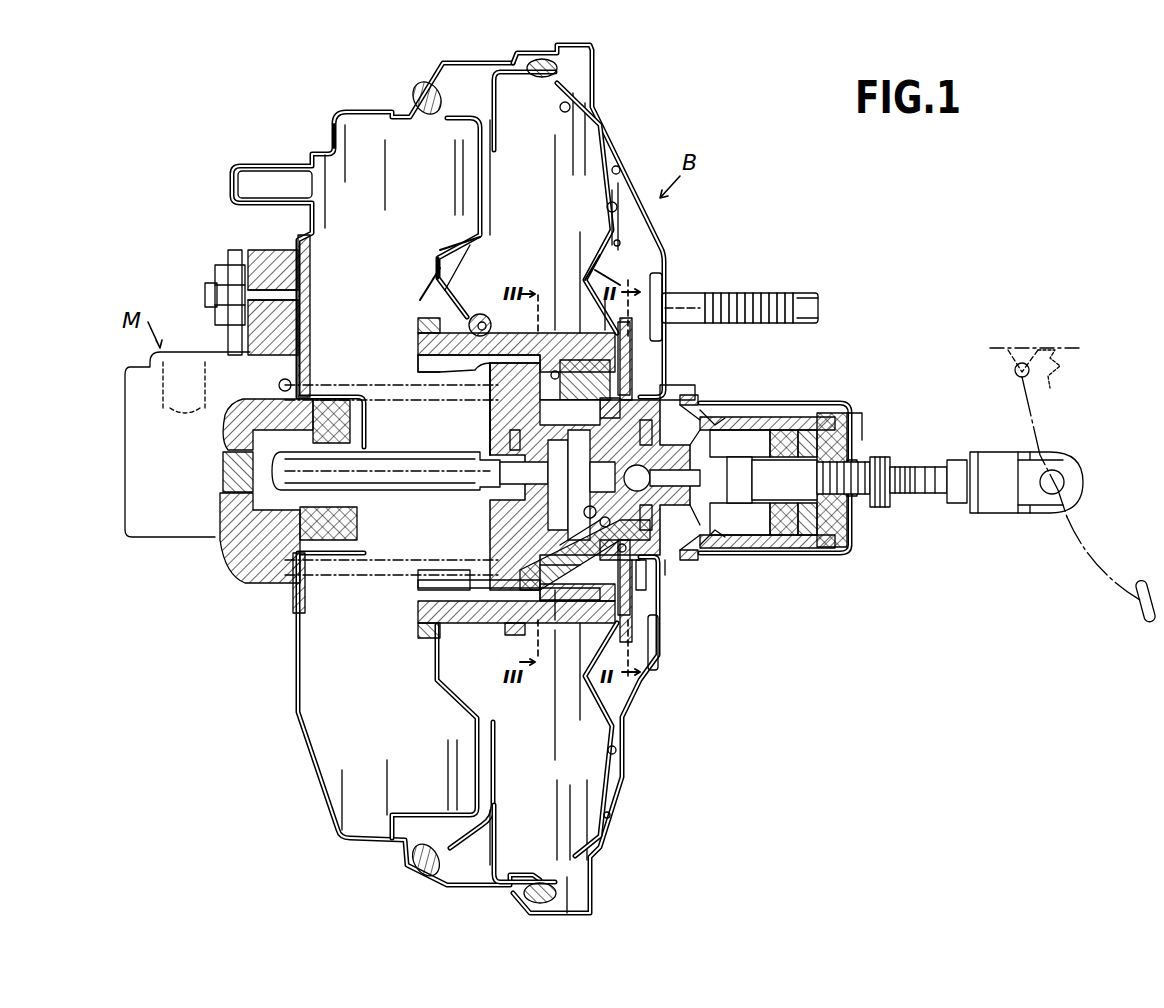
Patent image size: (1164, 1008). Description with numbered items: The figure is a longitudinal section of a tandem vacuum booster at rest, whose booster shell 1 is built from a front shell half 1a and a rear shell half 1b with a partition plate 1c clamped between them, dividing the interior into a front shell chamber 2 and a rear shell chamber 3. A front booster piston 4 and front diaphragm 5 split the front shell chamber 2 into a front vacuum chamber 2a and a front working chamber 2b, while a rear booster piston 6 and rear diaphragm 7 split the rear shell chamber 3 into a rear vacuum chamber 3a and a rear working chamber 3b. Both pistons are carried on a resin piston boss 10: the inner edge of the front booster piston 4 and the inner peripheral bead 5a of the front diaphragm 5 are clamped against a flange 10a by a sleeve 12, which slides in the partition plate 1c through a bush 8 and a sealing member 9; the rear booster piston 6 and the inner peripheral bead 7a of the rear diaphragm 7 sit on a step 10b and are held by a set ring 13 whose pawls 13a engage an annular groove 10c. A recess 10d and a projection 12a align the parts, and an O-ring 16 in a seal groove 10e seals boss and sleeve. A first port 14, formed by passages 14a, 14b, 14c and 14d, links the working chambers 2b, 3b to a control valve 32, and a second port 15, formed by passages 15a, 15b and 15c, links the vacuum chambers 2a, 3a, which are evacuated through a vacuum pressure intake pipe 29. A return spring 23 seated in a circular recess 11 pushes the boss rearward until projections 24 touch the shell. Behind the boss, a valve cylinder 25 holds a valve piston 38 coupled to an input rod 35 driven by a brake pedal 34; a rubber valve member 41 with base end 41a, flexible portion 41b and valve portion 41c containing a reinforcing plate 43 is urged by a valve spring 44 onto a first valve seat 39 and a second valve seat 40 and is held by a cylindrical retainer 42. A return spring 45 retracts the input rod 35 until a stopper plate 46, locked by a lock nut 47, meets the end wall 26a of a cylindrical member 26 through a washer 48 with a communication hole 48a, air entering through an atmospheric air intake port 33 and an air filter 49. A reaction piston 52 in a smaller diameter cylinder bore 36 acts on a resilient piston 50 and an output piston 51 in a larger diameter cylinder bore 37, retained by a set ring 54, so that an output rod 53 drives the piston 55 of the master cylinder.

The booster shell 1 is at (363, 111).
The front shell half 1a is at (336, 128).
The rear shell half 1b is at (610, 131).
The partition plate 1c is at (488, 168).
The front shell chamber 2 is at (384, 118).
The front vacuum chamber 2a is at (416, 502).
The front working chamber 2b is at (478, 193).
The rear shell chamber 3 is at (488, 80).
The rear vacuum chamber 3a is at (542, 447).
The rear working chamber 3b is at (616, 218).
The front booster piston 4 is at (440, 248).
The front diaphragm 5 is at (455, 263).
The inner peripheral bead 5a is at (435, 382).
The rear booster piston 6 is at (587, 268).
The rear diaphragm 7 is at (606, 272).
The inner peripheral bead 7a is at (585, 380).
The bush 8 is at (495, 323).
The sealing member 9 is at (480, 311).
The piston boss 10 is at (418, 345).
The flange 10a is at (430, 320).
The step 10b is at (643, 468).
The annular groove 10c is at (621, 479).
The recess 10d is at (479, 590).
The seal groove 10e is at (558, 383).
The circular recess 11 is at (468, 582).
The sleeve 12 is at (562, 335).
The projection 12a is at (516, 633).
The set ring 13 is at (640, 625).
The pawls 13a is at (651, 581).
The first port 14 is at (518, 410).
The passage 14a is at (679, 384).
The passage 14b is at (574, 419).
The passage 14c is at (499, 409).
The passage 14d is at (479, 382).
The second port 15 is at (590, 555).
The passage 15a is at (618, 553).
The passage 15b is at (557, 573).
The passage 15c is at (575, 617).
The O-ring 16 is at (569, 602).
The return spring 23 is at (312, 378).
The projections 24 is at (622, 170).
The valve cylinder 25 is at (755, 428).
The rearwardly extended cylindrical member 26 is at (826, 403).
The end wall 26a is at (858, 405).
The vacuum pressure intake pipe 29 is at (265, 168).
The control valve 32 is at (700, 460).
The atmospheric air intake port 33 is at (865, 498).
The brake pedal 34 is at (1086, 546).
The input rod 35 is at (910, 493).
The smaller diameter cylinder bore 36 is at (589, 510).
The larger diameter cylinder bore 37 is at (534, 432).
The valve piston 38 is at (610, 520).
The first annular valve seat 39 is at (653, 475).
The second annular valve seat 40 is at (645, 478).
The valve member 41 is at (701, 492).
The base end 41a is at (727, 401).
The flexible portion 41b is at (728, 557).
The valve portion 41c is at (683, 576).
The cylindrical retainer 42 is at (785, 428).
The reinforcing plate 43 is at (675, 480).
The valve spring 44 is at (744, 480).
The return spring 45 is at (784, 480).
The stopper plate 46 is at (860, 462).
The lock nut 47 is at (887, 458).
The washer 48 is at (845, 540).
The communication hole 48a is at (848, 416).
The air filter 49 is at (815, 540).
The resilient piston 50 is at (580, 532).
The output piston 51 is at (575, 485).
The reaction piston 52 is at (594, 477).
The output rod 53 is at (394, 492).
The set ring 54 is at (530, 472).
The piston 55 is at (232, 530).